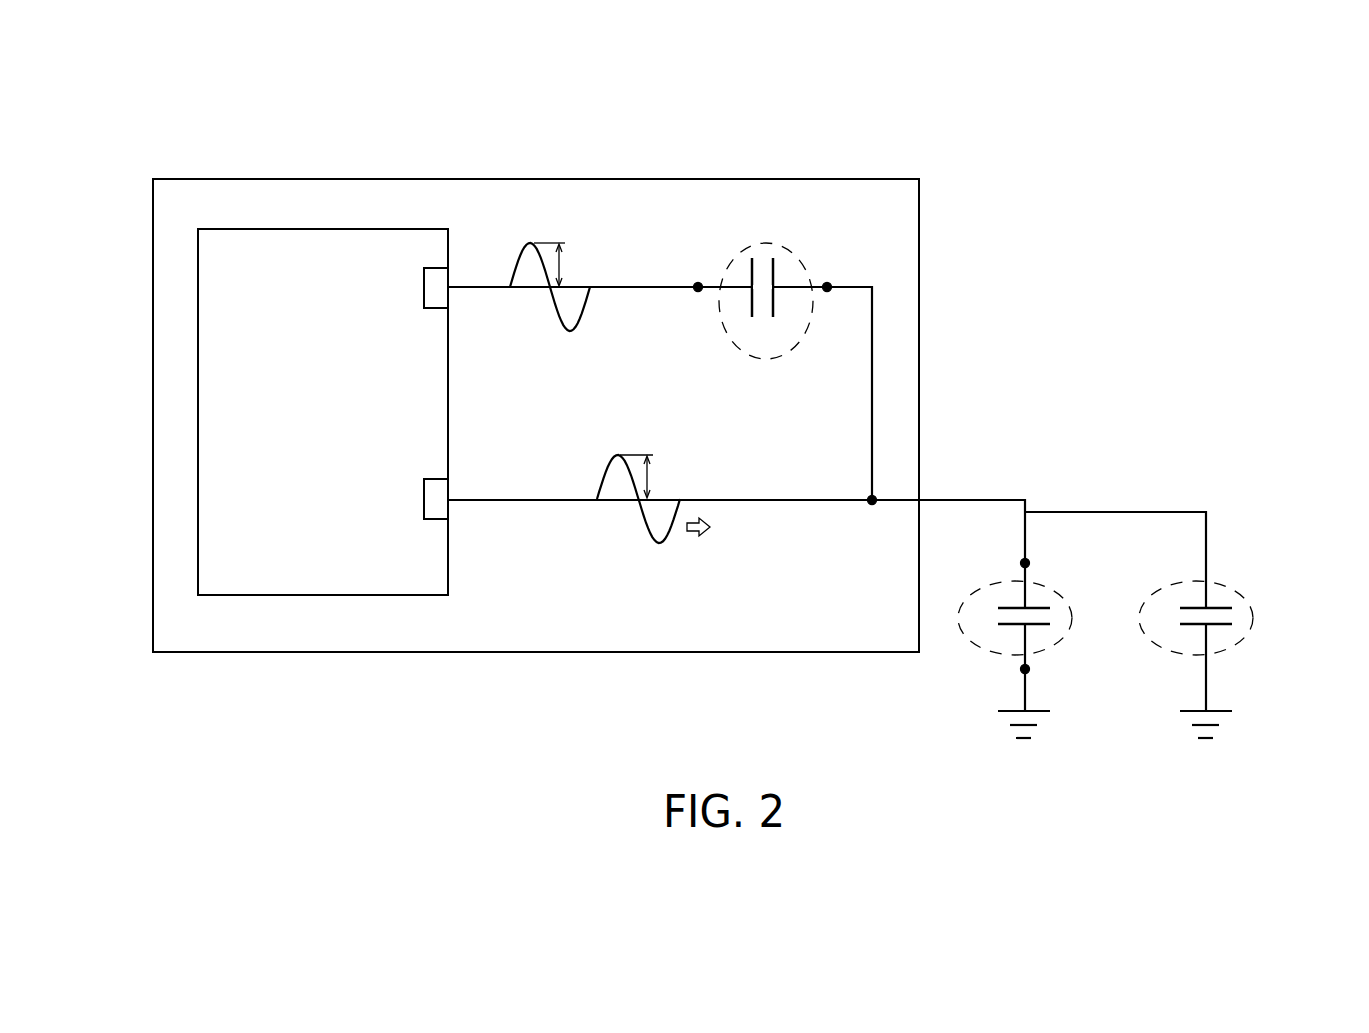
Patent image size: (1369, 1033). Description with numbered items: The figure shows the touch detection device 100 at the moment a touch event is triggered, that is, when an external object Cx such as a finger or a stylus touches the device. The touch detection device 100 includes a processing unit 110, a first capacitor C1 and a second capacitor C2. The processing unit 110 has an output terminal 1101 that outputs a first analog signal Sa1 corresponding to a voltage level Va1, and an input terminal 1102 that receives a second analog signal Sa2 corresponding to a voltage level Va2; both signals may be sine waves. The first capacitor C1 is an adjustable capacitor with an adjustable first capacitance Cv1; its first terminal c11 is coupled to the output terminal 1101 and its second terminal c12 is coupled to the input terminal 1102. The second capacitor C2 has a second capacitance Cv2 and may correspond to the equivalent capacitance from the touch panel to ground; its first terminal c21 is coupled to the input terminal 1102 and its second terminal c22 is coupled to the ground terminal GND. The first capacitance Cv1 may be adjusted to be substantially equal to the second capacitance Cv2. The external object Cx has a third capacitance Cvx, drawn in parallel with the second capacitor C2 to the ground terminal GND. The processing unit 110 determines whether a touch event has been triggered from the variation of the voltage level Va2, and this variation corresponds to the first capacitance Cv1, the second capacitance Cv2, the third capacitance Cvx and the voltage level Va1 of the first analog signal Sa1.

The touch detection device 100 is at (1203, 102).
The processing unit 110 is at (448, 553).
The output terminal 1101 is at (424, 296).
The input terminal 1102 is at (424, 508).
The first terminal c11 is at (692, 271).
The second terminal c12 is at (831, 271).
The first capacitor C1 is at (759, 303).
The first capacitance Cv1 is at (796, 344).
The first terminal c21 is at (1048, 551).
The second terminal c22 is at (1048, 678).
The second capacitor C2 is at (1007, 619).
The second capacitance Cv2 is at (1068, 607).
The external object Cx is at (1188, 619).
The third capacitance Cvx is at (1250, 607).
The first analog signal Sa1 is at (590, 222).
The second analog signal Sa2 is at (682, 434).
The voltage level Va1 is at (577, 264).
The voltage level Va2 is at (664, 476).
The ground terminal GND is at (1144, 729).